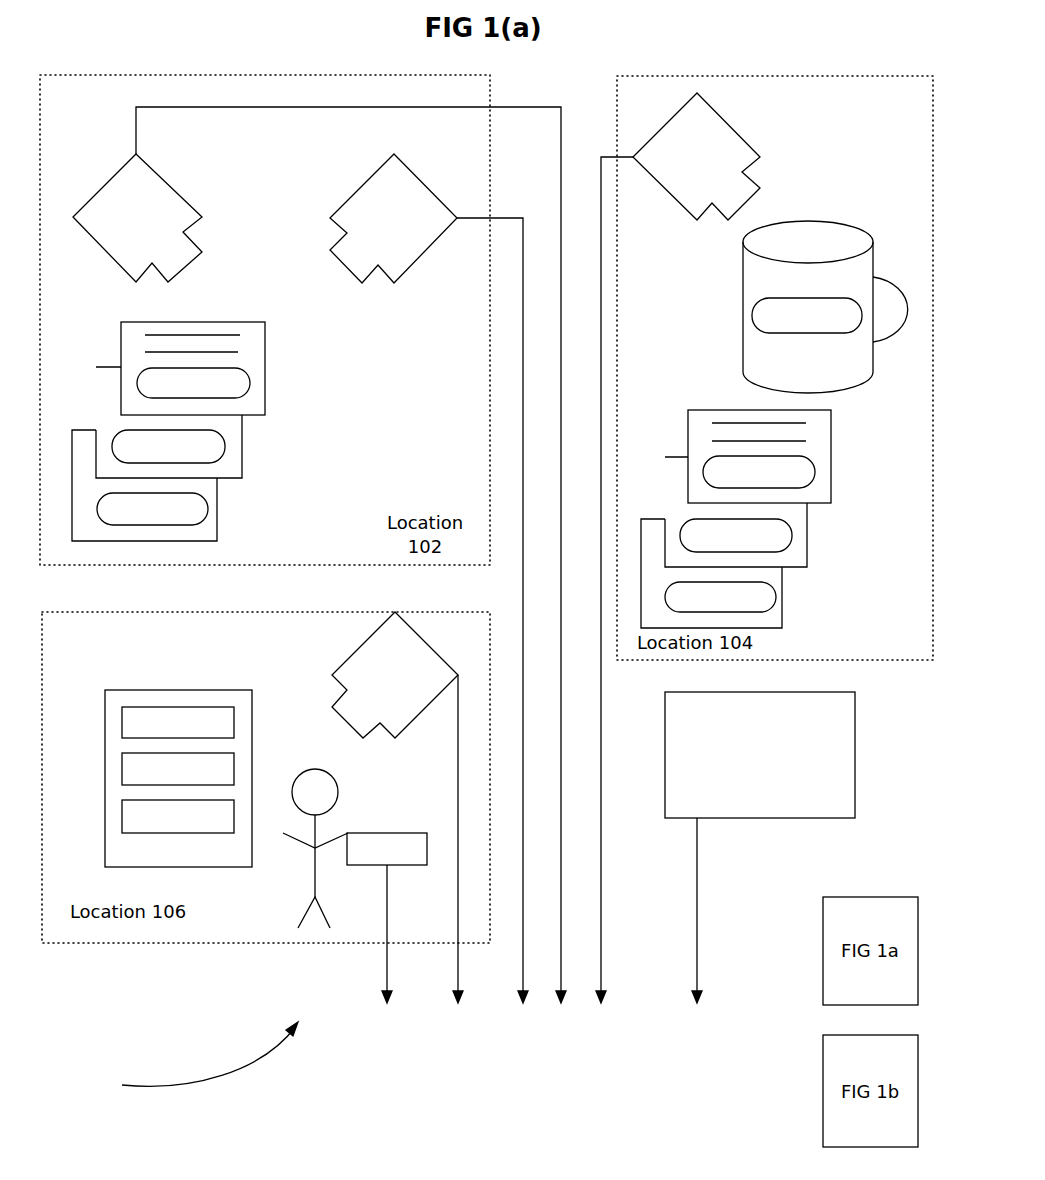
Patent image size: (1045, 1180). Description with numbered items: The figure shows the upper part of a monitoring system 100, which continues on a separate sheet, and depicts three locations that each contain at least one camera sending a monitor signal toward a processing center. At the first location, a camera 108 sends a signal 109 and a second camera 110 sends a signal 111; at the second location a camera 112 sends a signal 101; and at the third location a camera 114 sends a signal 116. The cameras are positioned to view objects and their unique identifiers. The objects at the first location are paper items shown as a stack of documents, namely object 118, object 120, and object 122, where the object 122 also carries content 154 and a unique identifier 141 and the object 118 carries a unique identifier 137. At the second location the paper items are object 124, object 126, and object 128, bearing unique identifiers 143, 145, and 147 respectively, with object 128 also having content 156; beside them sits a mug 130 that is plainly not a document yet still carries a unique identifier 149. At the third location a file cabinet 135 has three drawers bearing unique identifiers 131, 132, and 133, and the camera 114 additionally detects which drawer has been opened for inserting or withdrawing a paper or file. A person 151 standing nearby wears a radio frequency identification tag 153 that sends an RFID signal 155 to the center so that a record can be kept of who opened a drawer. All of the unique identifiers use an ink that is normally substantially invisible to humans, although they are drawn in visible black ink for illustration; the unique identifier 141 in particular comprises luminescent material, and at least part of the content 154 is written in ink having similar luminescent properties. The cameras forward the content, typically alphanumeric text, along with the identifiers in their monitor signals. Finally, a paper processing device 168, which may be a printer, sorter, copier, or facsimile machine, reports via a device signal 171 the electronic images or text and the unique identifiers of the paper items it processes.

The system 100 is at (190, 1057).
The signal 101 is at (601, 283).
The camera 108 is at (137, 218).
The signal 109 is at (168, 107).
The camera 110 is at (393, 218).
The signal 111 is at (473, 218).
The camera 112 is at (696, 156).
The camera 114 is at (395, 675).
The signal 116 is at (460, 960).
The object 118 is at (217, 493).
The object 120 is at (242, 460).
The object 122 is at (265, 367).
The object 124 is at (782, 582).
The object 126 is at (807, 550).
The object 128 is at (831, 457).
The mug 130 is at (807, 220).
The unique identifier 131 is at (122, 815).
The unique identifier 132 is at (234, 770).
The unique identifier 133 is at (234, 722).
The file cabinet 135 is at (178, 690).
The unique identifier 137 is at (208, 518).
The unique identifier 141 is at (248, 390).
The unique identifier 143 is at (776, 605).
The unique identifier 145 is at (790, 527).
The unique identifier 147 is at (813, 480).
The unique identifier 149 is at (803, 298).
The person 151 is at (338, 802).
The radio frequency identification (RFID) tag 153 is at (388, 833).
The content 154 is at (175, 333).
The RFID signal 155 is at (388, 963).
The content 156 is at (742, 423).
The paper processing device 168 is at (857, 752).
The device signal 171 is at (697, 865).